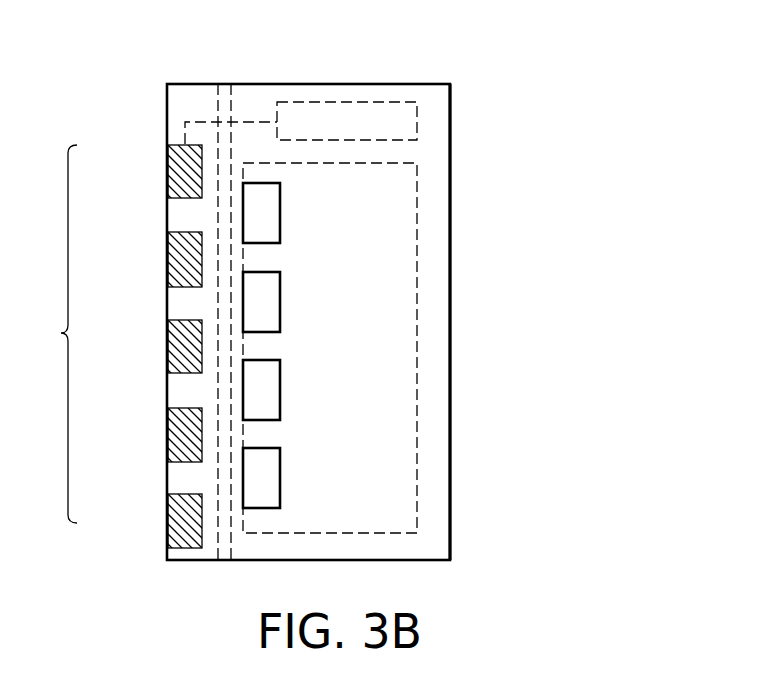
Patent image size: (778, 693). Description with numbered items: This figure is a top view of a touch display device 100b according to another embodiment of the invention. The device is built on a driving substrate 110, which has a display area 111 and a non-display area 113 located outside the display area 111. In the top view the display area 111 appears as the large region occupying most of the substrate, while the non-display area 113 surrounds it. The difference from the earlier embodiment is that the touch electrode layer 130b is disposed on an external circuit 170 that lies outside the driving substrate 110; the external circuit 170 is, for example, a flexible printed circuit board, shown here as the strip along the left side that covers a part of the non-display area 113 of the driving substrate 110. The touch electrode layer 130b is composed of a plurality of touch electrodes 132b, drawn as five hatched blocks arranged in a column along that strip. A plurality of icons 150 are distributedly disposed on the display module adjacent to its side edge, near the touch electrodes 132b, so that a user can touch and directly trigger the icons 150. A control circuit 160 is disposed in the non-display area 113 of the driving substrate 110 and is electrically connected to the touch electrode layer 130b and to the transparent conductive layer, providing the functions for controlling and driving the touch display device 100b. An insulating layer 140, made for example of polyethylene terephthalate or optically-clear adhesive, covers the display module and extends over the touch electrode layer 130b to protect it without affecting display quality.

The touch display device 100b is at (487, 575).
The driving substrate 110 is at (437, 449).
The display area 111 is at (372, 170).
The non-display area 113 is at (432, 160).
The touch electrode layer 130b is at (43, 334).
The touch electrodes 132b is at (176, 172).
The insulating layer 140 is at (450, 322).
The icons 150 is at (272, 209).
The control circuit 160 is at (322, 115).
The external circuit 170 is at (184, 106).